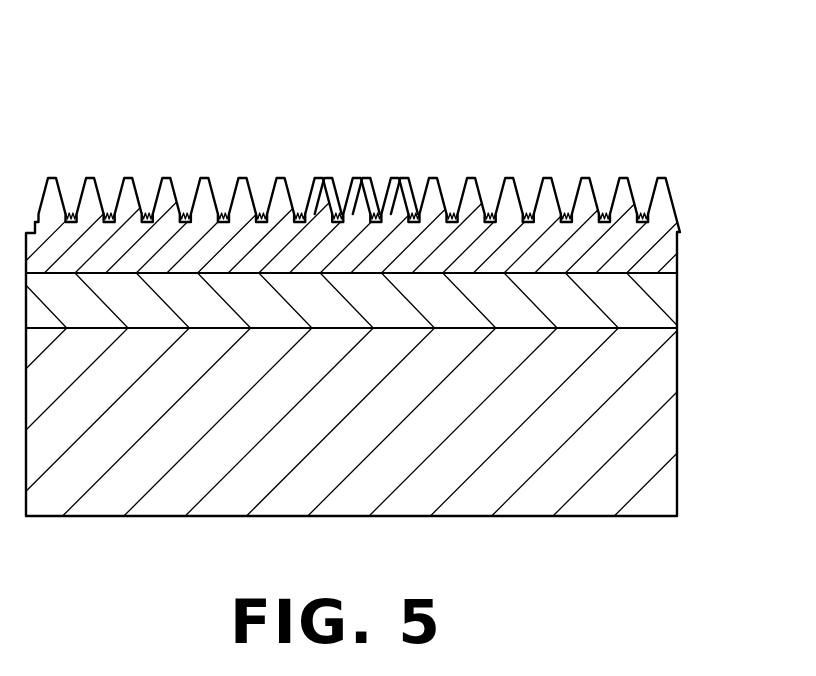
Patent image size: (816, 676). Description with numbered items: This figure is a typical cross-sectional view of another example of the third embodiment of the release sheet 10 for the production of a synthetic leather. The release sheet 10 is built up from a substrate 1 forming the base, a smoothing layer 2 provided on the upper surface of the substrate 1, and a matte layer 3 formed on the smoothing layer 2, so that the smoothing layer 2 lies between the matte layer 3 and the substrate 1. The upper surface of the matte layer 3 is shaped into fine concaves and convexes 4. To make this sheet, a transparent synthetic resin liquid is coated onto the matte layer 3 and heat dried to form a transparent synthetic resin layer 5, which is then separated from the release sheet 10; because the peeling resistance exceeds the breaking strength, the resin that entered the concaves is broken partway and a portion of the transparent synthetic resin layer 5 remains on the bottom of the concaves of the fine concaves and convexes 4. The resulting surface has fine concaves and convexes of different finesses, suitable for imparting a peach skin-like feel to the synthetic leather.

The substrate 1 is at (668, 435).
The smoothing layer 2 is at (667, 303).
The matte layer 3 is at (667, 253).
The fine concaves and convexes 4 is at (390, 192).
The transparent synthetic resin layer 5 is at (185, 217).
The release sheet 10 is at (549, 162).